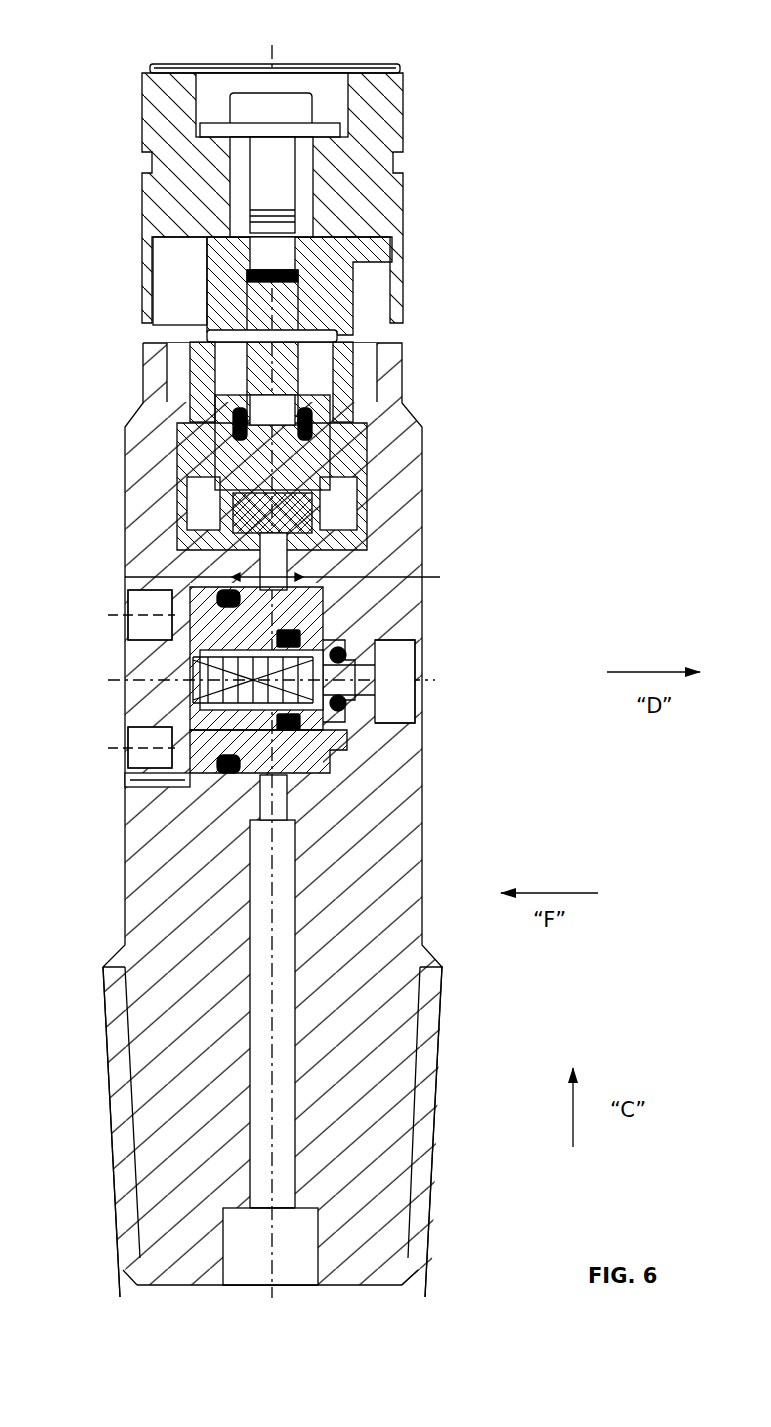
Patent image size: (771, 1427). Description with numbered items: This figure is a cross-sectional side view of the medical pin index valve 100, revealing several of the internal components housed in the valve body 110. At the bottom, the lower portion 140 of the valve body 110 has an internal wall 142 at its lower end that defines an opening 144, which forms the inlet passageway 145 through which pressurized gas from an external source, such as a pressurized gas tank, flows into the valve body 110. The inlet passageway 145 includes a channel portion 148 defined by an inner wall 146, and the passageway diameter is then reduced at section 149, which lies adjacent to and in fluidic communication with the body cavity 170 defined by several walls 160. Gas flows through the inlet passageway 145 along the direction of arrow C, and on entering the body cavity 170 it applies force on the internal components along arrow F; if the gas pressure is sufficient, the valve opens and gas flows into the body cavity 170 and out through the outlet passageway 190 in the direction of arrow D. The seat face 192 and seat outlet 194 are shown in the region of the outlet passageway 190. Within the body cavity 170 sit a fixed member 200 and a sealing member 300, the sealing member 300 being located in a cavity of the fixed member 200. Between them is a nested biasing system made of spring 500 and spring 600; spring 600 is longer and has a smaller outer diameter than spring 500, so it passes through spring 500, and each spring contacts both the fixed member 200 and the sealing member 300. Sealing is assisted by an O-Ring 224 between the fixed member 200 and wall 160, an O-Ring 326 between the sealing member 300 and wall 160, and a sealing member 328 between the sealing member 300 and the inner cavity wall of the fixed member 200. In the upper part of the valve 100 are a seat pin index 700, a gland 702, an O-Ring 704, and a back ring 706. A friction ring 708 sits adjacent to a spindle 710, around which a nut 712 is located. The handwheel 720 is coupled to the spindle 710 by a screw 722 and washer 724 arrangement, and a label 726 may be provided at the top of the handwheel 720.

The medical pin index valve 100 is at (571, 166).
The valve body 110 is at (125, 898).
The lower portion 140 is at (163, 1158).
The internal wall 142 is at (318, 1262).
The opening 144 is at (238, 1289).
The inlet passageway 145 is at (260, 1265).
The inner wall 146 is at (250, 1085).
The channel portion 148 is at (258, 1138).
The reduced-diameter section 149 is at (278, 790).
The walls 160 is at (323, 615).
The body cavity 170 is at (322, 578).
The outlet passageway 190 is at (375, 690).
The seat face 192 is at (312, 647).
The seat outlet 194 is at (400, 722).
The fixed member 200 is at (125, 645).
The O-Ring 224 is at (150, 695).
The sealing member 300 is at (380, 636).
The O-Ring 326 is at (345, 722).
The sealing member 328 is at (320, 748).
The spring 500 is at (125, 810).
The spring 600 is at (125, 765).
The seat pin index 700 is at (128, 588).
The gland 702 is at (150, 498).
The O-Ring 704 is at (185, 472).
The back ring 706 is at (238, 412).
The friction ring 708 is at (247, 282).
The spindle 710 is at (207, 278).
The nut 712 is at (172, 252).
The handwheel 720 is at (140, 127).
The screw 722 is at (233, 97).
The washer 724 is at (212, 125).
The label 726 is at (205, 66).